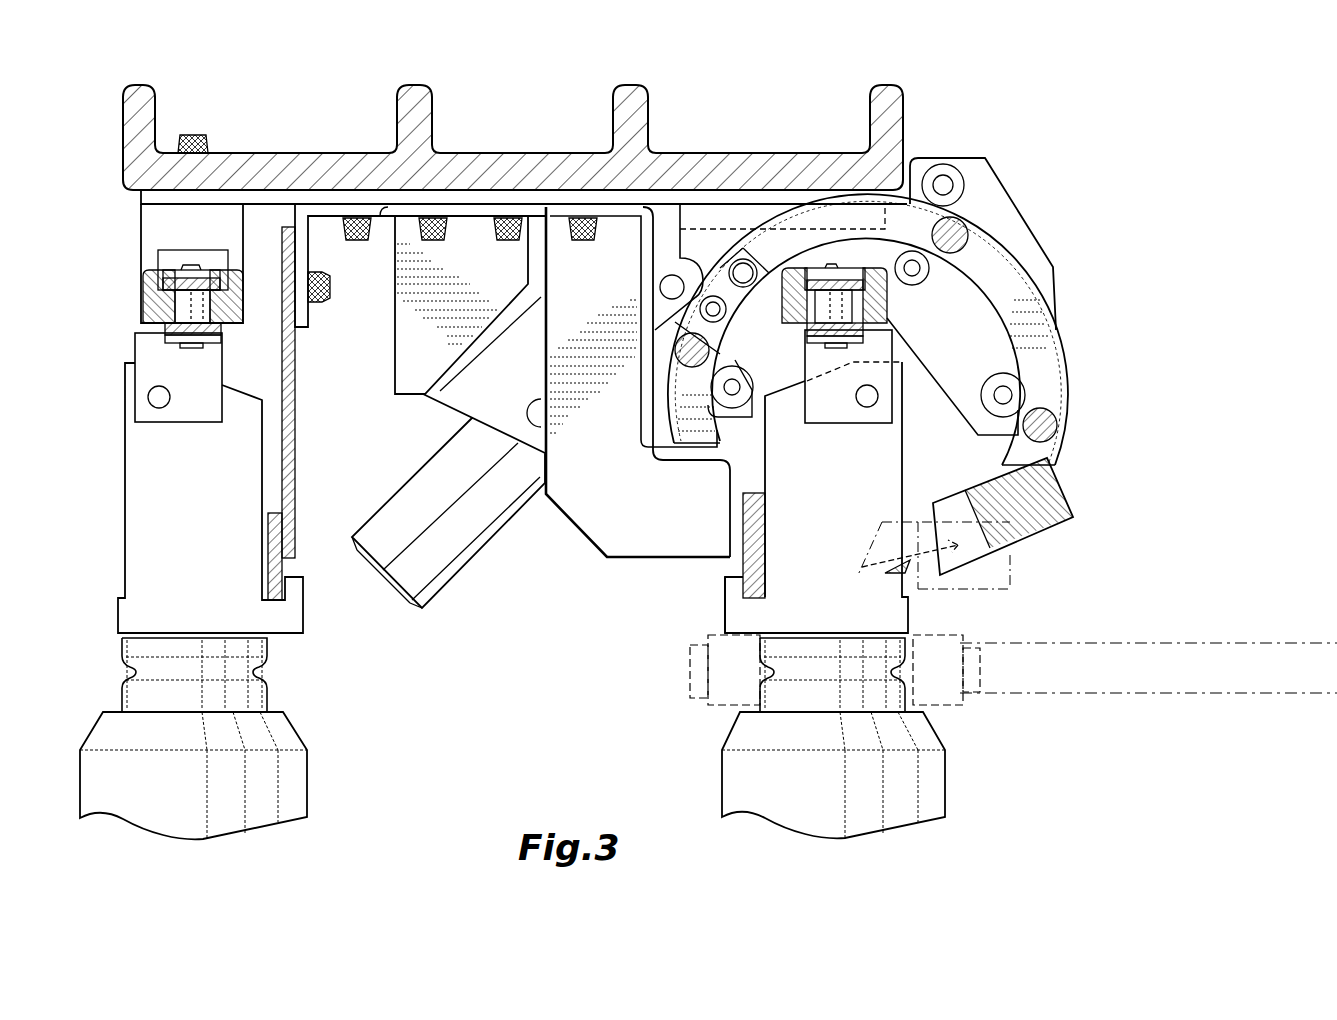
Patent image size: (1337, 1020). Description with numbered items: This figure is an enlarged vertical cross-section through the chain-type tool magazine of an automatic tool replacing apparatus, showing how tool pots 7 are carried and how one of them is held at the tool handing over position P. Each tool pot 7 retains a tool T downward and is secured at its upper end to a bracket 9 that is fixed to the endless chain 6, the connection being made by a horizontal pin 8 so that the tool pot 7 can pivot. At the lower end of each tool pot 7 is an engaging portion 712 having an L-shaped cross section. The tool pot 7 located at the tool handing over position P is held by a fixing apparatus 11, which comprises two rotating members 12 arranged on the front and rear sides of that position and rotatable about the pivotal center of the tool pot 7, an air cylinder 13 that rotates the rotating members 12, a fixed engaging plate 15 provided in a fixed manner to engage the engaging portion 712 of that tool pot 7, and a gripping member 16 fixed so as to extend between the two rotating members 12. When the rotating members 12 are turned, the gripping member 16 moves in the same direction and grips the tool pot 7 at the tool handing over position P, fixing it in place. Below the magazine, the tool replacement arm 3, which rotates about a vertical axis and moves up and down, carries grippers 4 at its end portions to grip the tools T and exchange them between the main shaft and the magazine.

The tool replacement arm 3 is at (1100, 700).
The gripper 4 is at (935, 678).
The endless chain 6 is at (165, 268).
The tool pot 7 is at (127, 530).
The engaging portion 712 is at (727, 580).
The horizontal pin 8 is at (867, 400).
The bracket 9 is at (822, 430).
The fixing apparatus 11 is at (1076, 566).
The rotating member 12 is at (1056, 372).
The air cylinder 13 is at (455, 556).
The fixed engaging plate 15 is at (762, 560).
The gripping member 16 is at (862, 567).
The tool handing over position P is at (1094, 463).
The tool T is at (290, 797).